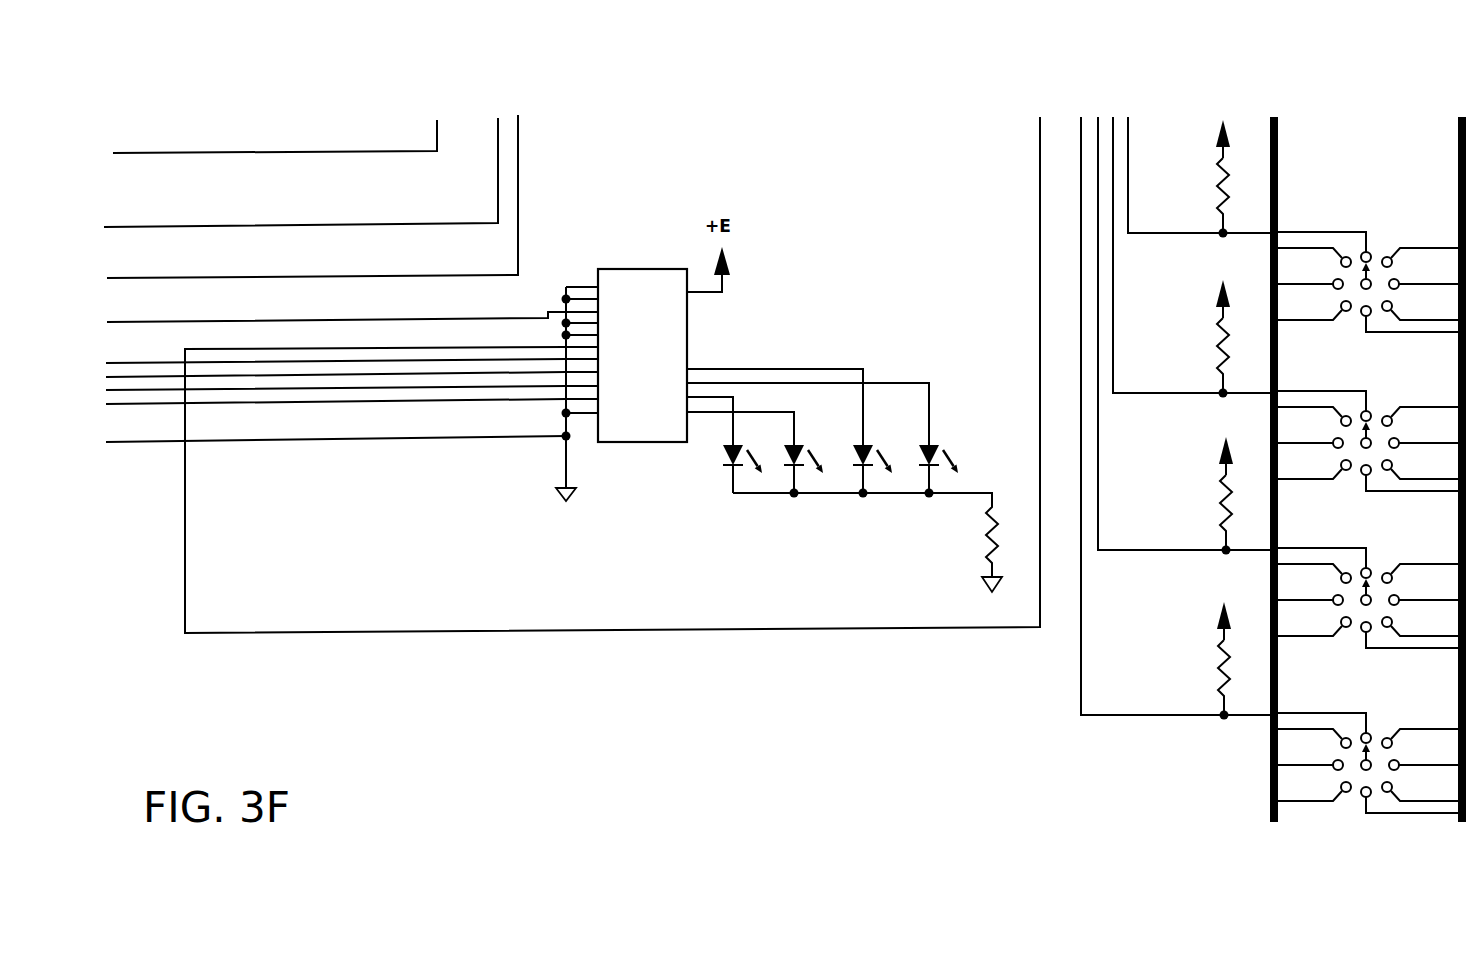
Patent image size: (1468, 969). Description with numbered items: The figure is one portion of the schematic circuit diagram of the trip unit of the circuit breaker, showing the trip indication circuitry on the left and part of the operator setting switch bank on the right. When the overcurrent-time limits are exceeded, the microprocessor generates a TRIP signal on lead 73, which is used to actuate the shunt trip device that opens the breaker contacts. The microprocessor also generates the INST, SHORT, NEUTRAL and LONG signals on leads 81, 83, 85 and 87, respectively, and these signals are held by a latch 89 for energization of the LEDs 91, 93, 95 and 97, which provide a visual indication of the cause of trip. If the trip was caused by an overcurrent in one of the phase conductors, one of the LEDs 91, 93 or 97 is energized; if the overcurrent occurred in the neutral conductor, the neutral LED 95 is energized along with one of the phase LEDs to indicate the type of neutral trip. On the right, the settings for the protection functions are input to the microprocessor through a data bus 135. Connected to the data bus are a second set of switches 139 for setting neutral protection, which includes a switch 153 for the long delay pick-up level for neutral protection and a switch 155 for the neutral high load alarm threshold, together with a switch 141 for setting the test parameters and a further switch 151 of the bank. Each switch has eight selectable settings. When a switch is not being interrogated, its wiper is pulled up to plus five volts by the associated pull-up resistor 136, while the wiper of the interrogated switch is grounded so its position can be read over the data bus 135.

The lead 73 is at (205, 152).
The lead 81 is at (232, 391).
The lead 83 is at (298, 405).
The lead 85 is at (347, 364).
The lead 87 is at (433, 378).
The latch 89 is at (675, 338).
The LED 91 is at (728, 457).
The LED 93 is at (790, 457).
The neutral LED 95 is at (861, 457).
The LED 97 is at (925, 457).
The data bus 135 is at (1268, 762).
The pull-up resistor 136 is at (1215, 176).
The second set of switches 139 is at (1203, 490).
The switch 141 is at (1352, 788).
The switch 151 is at (1355, 303).
The switch 153 is at (1351, 463).
The switch 155 is at (1355, 621).